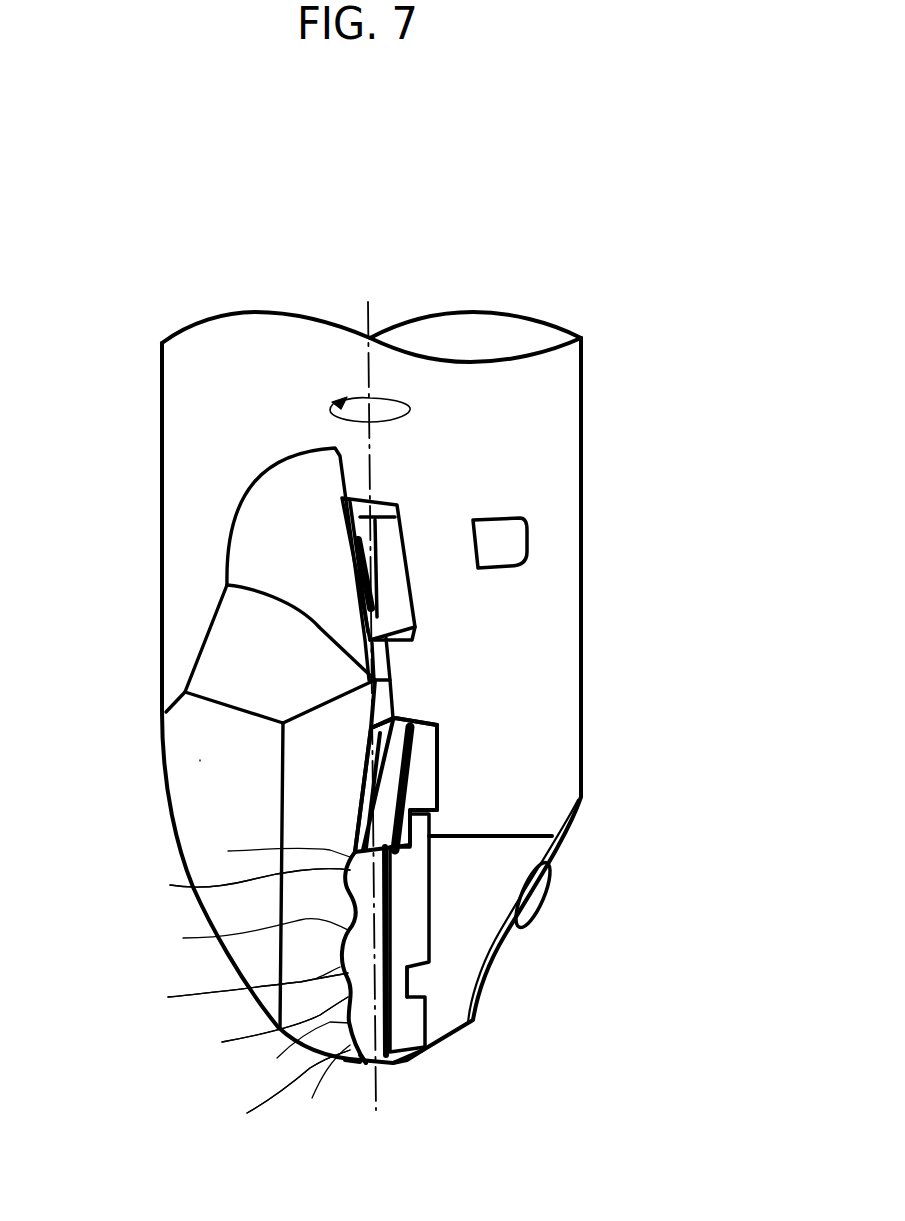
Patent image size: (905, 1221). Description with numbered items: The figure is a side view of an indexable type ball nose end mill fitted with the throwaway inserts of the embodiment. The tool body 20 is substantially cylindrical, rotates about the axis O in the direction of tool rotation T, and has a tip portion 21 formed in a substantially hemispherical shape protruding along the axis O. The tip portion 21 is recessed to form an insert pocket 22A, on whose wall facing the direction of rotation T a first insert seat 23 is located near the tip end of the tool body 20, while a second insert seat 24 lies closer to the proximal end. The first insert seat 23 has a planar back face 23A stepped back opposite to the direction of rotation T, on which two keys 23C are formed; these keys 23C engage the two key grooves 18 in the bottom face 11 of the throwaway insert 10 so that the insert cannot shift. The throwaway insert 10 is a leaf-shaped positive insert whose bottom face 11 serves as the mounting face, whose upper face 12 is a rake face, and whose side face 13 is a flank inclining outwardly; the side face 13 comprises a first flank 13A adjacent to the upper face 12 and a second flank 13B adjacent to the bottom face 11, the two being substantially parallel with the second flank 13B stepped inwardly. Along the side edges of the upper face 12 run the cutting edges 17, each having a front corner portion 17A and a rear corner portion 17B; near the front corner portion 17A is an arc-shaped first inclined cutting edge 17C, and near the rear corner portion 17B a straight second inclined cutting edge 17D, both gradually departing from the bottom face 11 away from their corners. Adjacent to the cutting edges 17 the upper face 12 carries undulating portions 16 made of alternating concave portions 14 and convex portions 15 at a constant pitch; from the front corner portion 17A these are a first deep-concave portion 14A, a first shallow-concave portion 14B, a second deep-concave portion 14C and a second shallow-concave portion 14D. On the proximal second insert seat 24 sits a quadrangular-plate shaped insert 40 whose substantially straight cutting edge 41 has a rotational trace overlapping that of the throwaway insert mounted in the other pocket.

The throwaway insert 10 is at (418, 1080).
The bottom face 11 is at (418, 913).
The upper face 12 is at (338, 834).
The side face 13 is at (665, 655).
The first flank 13A is at (420, 716).
The second flank 13B is at (437, 753).
The concave portions 14 is at (259, 991).
The first deep-concave portion 14A is at (246, 1090).
The first shallow-concave portion 14B is at (235, 1029).
The second deep-concave portion 14C is at (206, 993).
The second shallow-concave portion 14D is at (206, 883).
The convex portions 15 is at (251, 983).
The undulating portions 16 is at (334, 897).
The cutting edges 17 is at (348, 930).
The front corner portion 17A is at (358, 1067).
The rear corner portion 17B is at (393, 715).
The first inclined cutting edge 17C is at (352, 1064).
The second inclined cutting edge 17D is at (356, 768).
The key grooves 18 is at (430, 842).
The tool body 20 is at (590, 450).
The tip portion 21 is at (545, 797).
The insert pocket 22A is at (210, 770).
The first insert seat 23 is at (552, 889).
The back face 23A is at (440, 932).
The keys 23C is at (428, 824).
The second insert seat 24 is at (385, 556).
The insert 40 is at (401, 509).
The cutting edge 41 is at (380, 587).
The axis O is at (369, 312).
The direction of tool rotation T is at (369, 392).